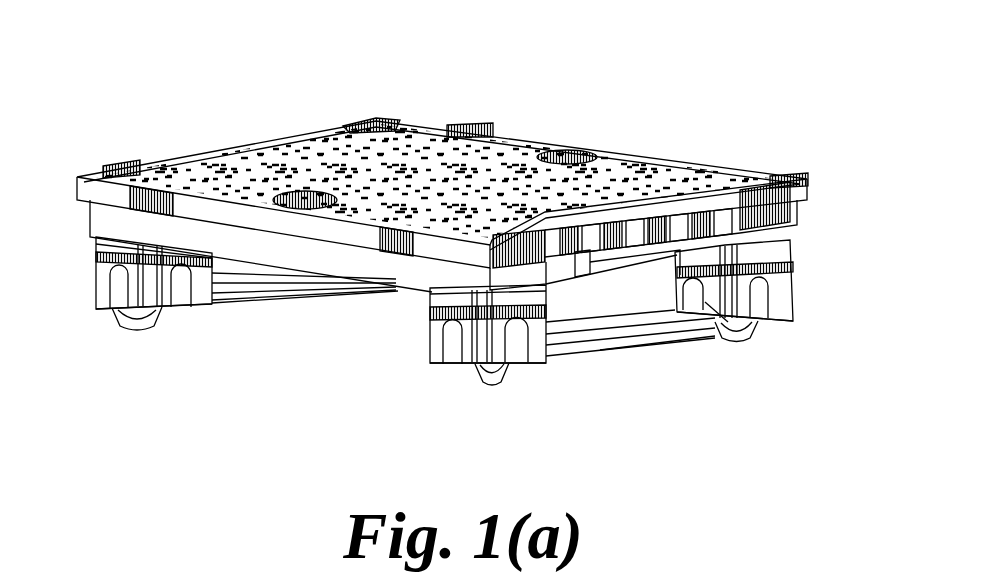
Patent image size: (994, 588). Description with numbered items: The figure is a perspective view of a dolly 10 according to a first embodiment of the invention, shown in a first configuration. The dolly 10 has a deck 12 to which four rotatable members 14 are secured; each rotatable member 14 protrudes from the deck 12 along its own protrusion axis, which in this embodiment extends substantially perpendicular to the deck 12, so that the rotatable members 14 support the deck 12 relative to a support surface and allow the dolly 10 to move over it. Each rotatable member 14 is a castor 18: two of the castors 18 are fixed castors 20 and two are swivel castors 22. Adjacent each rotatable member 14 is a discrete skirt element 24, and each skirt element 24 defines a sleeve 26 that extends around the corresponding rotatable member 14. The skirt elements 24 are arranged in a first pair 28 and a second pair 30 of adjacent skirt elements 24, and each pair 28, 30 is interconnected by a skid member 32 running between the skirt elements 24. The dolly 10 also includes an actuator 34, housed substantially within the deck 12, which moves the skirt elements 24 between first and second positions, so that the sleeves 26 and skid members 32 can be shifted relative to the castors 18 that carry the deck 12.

The dolly 10 is at (232, 97).
The deck 12 is at (645, 185).
The rotatable member 14 is at (140, 331).
The castor 18 is at (157, 317).
The fixed castor 20 is at (122, 320).
The swivel castor 22 is at (514, 378).
The skirt element 24 is at (107, 283).
The sleeve 26 is at (182, 291).
The first pair of adjacent skirt elements 28 is at (700, 357).
The second pair of adjacent skirt elements 30 is at (290, 378).
The skid member 32 is at (300, 289).
The actuator 34 is at (590, 257).